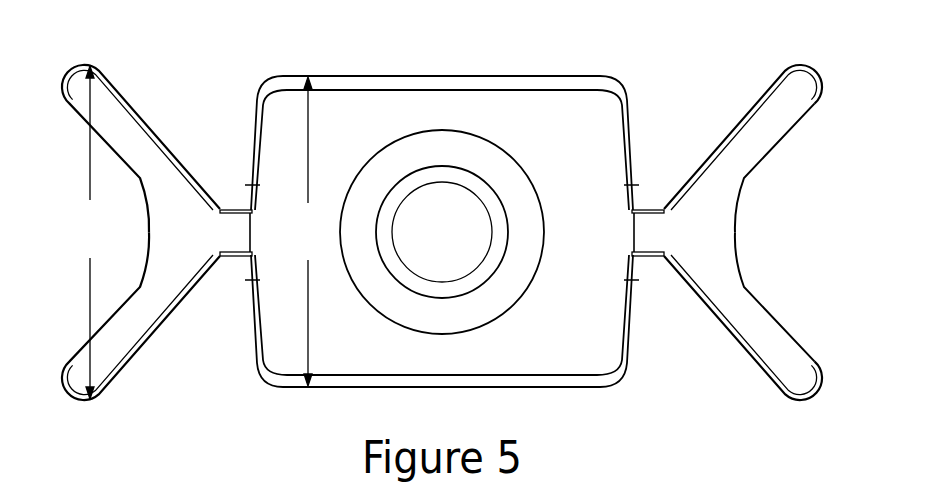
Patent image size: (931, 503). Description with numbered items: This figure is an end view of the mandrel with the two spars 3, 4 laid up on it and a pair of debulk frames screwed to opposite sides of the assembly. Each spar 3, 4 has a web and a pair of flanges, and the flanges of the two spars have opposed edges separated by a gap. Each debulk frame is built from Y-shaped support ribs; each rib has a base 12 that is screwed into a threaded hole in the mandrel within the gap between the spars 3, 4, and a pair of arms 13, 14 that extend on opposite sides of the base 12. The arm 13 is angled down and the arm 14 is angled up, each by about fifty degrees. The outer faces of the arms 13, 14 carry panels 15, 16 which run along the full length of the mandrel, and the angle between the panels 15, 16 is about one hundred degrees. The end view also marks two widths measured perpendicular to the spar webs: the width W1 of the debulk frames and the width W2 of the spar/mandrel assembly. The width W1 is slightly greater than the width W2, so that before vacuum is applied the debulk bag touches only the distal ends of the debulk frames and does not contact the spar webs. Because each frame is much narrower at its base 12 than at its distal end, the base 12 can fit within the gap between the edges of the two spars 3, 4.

The spar 3 is at (432, 77).
The spar 4 is at (553, 380).
The base 12 is at (648, 232).
The arm 13 is at (747, 307).
The arm 14 is at (747, 142).
The panel 15 is at (703, 300).
The panel 16 is at (730, 131).
The width of the debulk frames W1 is at (141, 232).
The width of the spar/mandrel assembly W2 is at (308, 231).